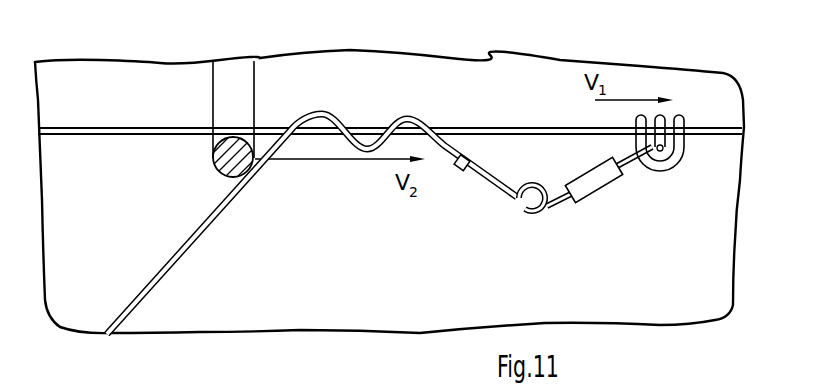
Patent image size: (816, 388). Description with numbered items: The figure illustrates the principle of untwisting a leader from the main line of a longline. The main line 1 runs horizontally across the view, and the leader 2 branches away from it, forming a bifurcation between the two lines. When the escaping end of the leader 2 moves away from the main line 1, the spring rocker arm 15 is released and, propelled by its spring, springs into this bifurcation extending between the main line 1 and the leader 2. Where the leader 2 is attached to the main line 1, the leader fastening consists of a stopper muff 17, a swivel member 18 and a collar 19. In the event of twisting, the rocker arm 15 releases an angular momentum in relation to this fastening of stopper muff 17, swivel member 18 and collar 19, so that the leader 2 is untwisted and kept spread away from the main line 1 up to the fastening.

The main line 1 is at (727, 137).
The leader 2 is at (220, 210).
The spring rocker arm 15 is at (218, 96).
The stopper muff 17 is at (660, 143).
The swivel member 18 is at (682, 138).
The collar 19 is at (597, 183).